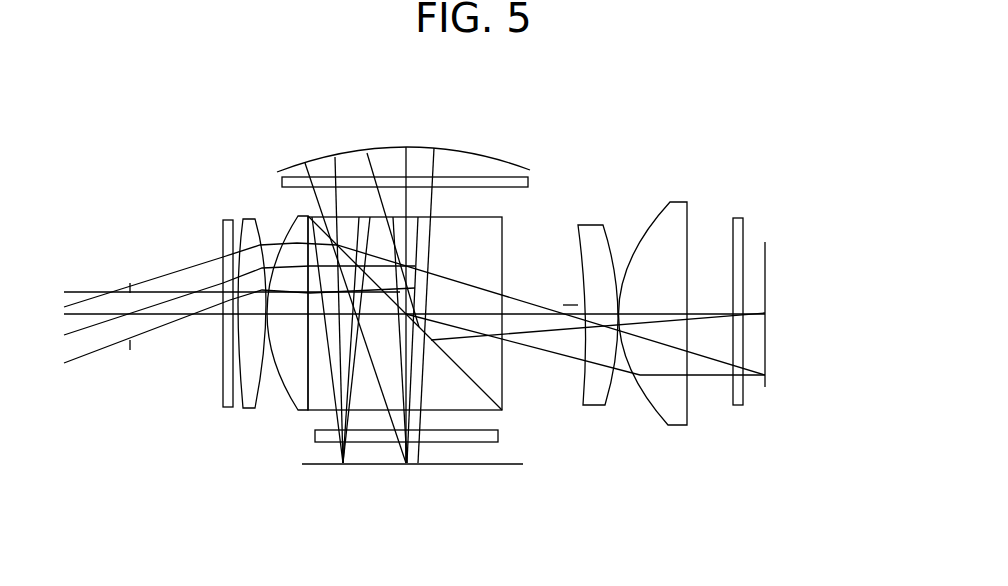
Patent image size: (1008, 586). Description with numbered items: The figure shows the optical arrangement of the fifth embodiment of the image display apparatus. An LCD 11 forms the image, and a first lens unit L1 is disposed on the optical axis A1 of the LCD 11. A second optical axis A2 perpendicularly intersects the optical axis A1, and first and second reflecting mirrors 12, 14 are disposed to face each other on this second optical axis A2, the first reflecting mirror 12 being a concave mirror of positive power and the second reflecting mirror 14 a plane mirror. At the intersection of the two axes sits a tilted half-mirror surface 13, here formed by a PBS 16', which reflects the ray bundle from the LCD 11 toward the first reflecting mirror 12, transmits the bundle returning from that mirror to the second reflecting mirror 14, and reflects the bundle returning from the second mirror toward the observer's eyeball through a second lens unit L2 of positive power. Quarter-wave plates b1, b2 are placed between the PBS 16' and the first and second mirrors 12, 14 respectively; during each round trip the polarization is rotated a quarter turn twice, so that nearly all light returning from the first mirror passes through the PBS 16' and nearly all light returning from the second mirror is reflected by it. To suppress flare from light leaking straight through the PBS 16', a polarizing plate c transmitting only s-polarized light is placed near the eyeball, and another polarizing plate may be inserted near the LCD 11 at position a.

The first reflecting mirror 12 is at (495, 152).
The quarter-wave plate b1 is at (530, 182).
The PBS 16' is at (436, 298).
The half-mirror surface 13 is at (485, 388).
The quarter-wave plate b2 is at (498, 436).
The second reflecting mirror 14 is at (313, 467).
The second optical axis A2 is at (403, 387).
The polarizing plate c is at (228, 407).
The second lens unit L2 is at (307, 418).
The optical axis of the LCD A1 is at (565, 305).
The first lens unit L1 is at (575, 428).
The polarizing plate position a is at (738, 405).
The LCD 11 is at (765, 250).